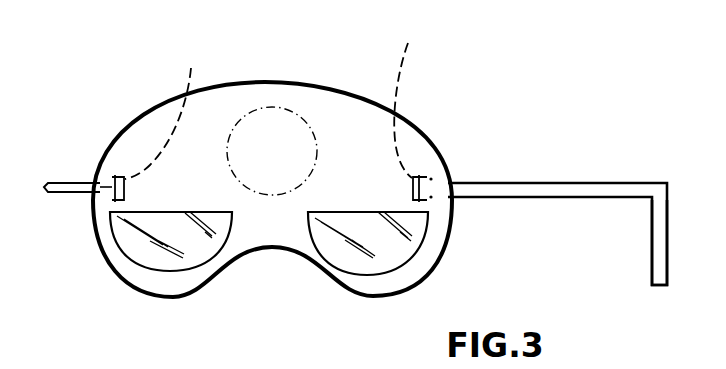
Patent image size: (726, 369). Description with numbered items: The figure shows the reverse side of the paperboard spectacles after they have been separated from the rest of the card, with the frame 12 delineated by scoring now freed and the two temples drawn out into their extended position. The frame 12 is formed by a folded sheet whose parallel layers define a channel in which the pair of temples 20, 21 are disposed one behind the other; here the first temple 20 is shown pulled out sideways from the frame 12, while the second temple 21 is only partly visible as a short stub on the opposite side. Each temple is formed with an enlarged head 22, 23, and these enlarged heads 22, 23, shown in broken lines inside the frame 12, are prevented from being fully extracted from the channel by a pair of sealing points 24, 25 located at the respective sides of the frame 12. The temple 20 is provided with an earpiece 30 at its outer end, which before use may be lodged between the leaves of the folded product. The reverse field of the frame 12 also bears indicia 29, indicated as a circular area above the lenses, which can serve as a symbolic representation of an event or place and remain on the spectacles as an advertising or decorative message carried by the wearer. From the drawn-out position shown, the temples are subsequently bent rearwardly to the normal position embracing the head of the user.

The frame 12 is at (170, 287).
The temple 20 is at (562, 182).
The temple 21 is at (70, 182).
The enlarged head 22 is at (409, 99).
The enlarged head 23 is at (165, 110).
The sealing point 24 is at (431, 197).
The sealing point 25 is at (117, 201).
The indicia 29 is at (272, 107).
The earpiece 30 is at (662, 214).